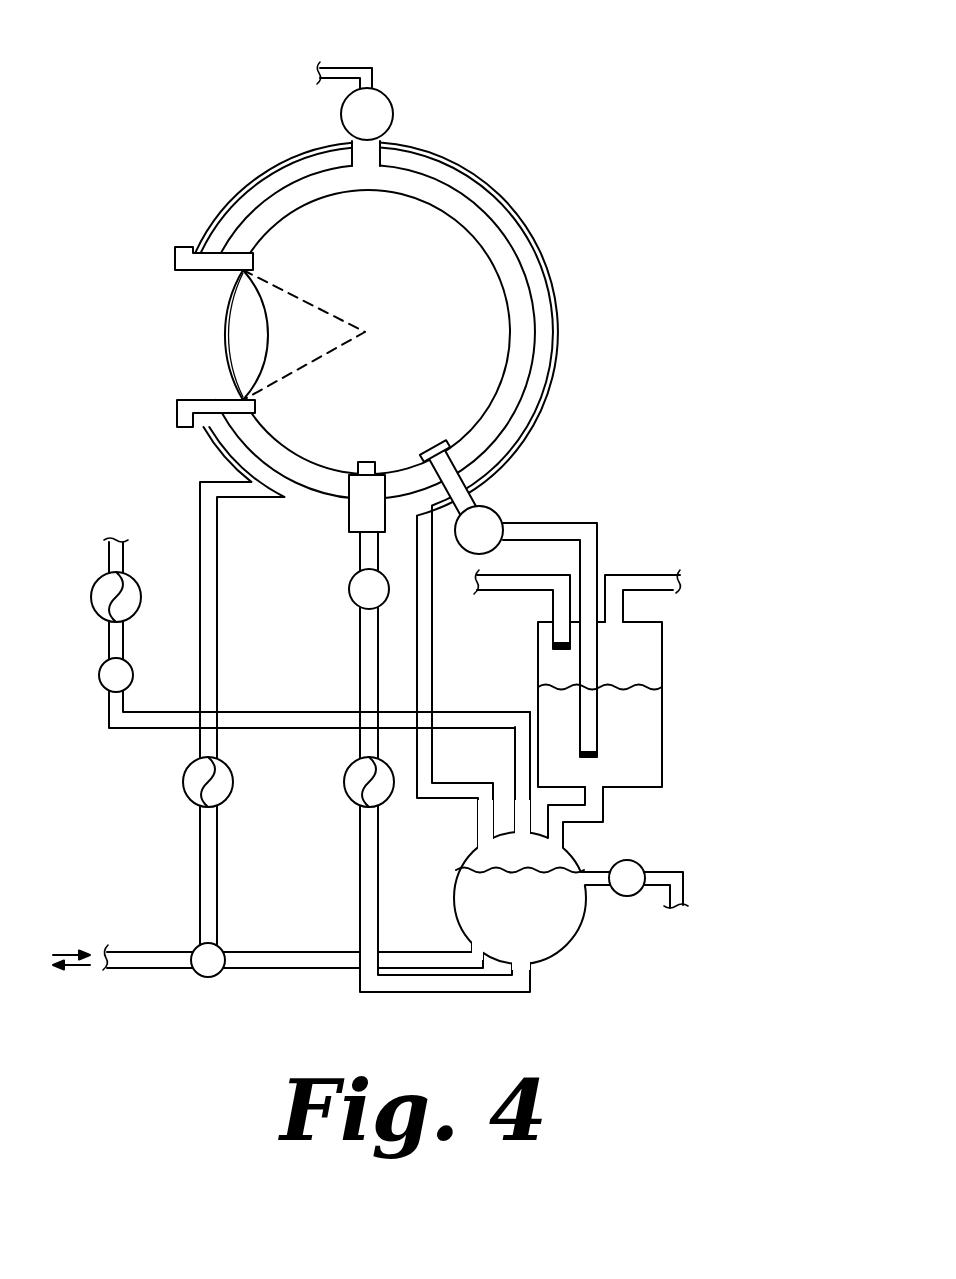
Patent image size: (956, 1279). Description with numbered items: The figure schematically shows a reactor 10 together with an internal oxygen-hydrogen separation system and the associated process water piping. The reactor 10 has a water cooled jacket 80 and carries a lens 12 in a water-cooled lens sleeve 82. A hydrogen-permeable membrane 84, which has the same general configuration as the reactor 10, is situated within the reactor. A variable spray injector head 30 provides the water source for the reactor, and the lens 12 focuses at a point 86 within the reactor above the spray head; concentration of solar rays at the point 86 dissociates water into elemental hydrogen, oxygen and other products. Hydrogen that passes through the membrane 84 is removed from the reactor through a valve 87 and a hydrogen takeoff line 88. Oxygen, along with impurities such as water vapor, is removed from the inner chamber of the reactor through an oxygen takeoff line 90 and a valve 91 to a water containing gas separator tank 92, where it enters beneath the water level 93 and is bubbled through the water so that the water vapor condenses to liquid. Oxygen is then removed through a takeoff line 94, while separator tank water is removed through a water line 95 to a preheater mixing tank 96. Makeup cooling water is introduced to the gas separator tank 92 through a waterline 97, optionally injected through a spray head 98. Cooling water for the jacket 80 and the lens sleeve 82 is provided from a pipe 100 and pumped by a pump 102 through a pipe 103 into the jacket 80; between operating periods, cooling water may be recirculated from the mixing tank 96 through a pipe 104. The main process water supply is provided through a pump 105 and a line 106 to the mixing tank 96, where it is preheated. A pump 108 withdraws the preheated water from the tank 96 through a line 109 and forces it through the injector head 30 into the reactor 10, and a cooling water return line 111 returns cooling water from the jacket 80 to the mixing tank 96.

The reactor 10 is at (411, 328).
The lens 12 is at (228, 364).
The variable spray injector head 30 is at (367, 456).
The water cooled jacket 80 is at (512, 383).
The water-cooled lens sleeve 82 is at (172, 258).
The hydrogen-permeable membrane 84 is at (508, 337).
The focal point 86 is at (367, 331).
The valve 87 is at (391, 99).
The hydrogen takeoff line 88 is at (349, 64).
The oxygen takeoff line 90 is at (497, 486).
The valve 91 is at (504, 522).
The gas separator tank 92 is at (664, 752).
The water level 93 is at (606, 688).
The takeoff line 94 is at (630, 572).
The water line 95 is at (605, 799).
The preheater mixing tank 96 is at (582, 930).
The waterline 97 is at (499, 593).
The spray head 98 is at (553, 648).
The pipe 100 is at (150, 976).
The pump 102 is at (233, 780).
The pipe 103 is at (220, 636).
The pipe 104 is at (268, 950).
The pump 105 is at (142, 590).
The line 106 is at (497, 728).
The pump 108 is at (338, 806).
The line 109 is at (360, 922).
The cooling water return line 111 is at (448, 802).